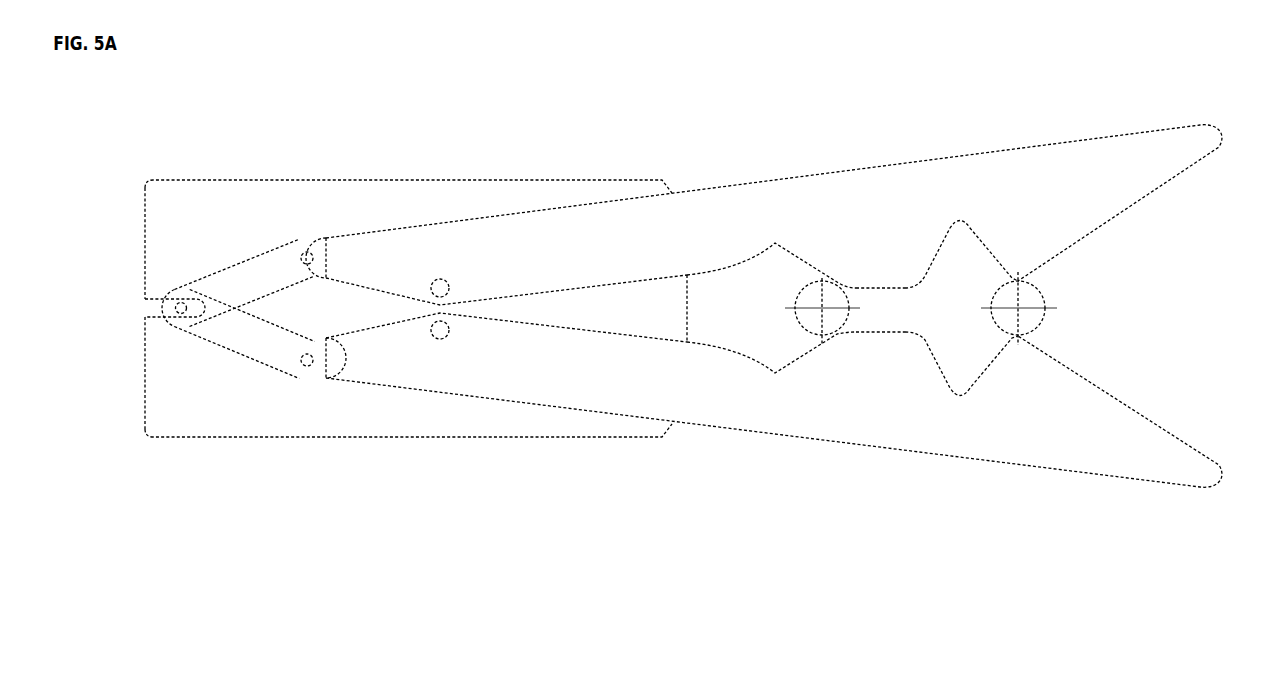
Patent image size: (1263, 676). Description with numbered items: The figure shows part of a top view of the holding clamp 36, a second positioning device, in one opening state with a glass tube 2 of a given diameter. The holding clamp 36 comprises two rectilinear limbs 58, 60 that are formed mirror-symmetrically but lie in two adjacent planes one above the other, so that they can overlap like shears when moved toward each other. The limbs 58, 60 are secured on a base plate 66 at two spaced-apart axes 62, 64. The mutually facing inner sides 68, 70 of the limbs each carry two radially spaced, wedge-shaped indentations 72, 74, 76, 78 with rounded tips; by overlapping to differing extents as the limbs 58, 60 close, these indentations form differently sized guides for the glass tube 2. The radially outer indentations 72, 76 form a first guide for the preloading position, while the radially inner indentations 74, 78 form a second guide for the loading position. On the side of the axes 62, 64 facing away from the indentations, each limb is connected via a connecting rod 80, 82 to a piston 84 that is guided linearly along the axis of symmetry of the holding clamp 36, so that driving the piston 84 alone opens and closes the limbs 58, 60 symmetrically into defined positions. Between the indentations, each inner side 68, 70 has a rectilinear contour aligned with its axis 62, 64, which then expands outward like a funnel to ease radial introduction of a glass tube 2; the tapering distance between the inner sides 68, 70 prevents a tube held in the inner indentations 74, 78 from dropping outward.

The glass tube 2 is at (848, 307).
The holding clamp 36 is at (666, 488).
The limb 58 is at (873, 412).
The limb 60 is at (840, 205).
The axis 62 is at (440, 332).
The axis 64 is at (441, 282).
The base plate 66 is at (325, 412).
The inner side 68 is at (877, 333).
The inner side 70 is at (887, 283).
The radially outer indentation 72 is at (965, 368).
The radially inner indentation 74 is at (783, 358).
The radially outer indentation 76 is at (963, 248).
The radially inner indentation 78 is at (777, 256).
The connecting rod 80 is at (306, 362).
The connecting rod 82 is at (305, 254).
The piston 84 is at (178, 310).